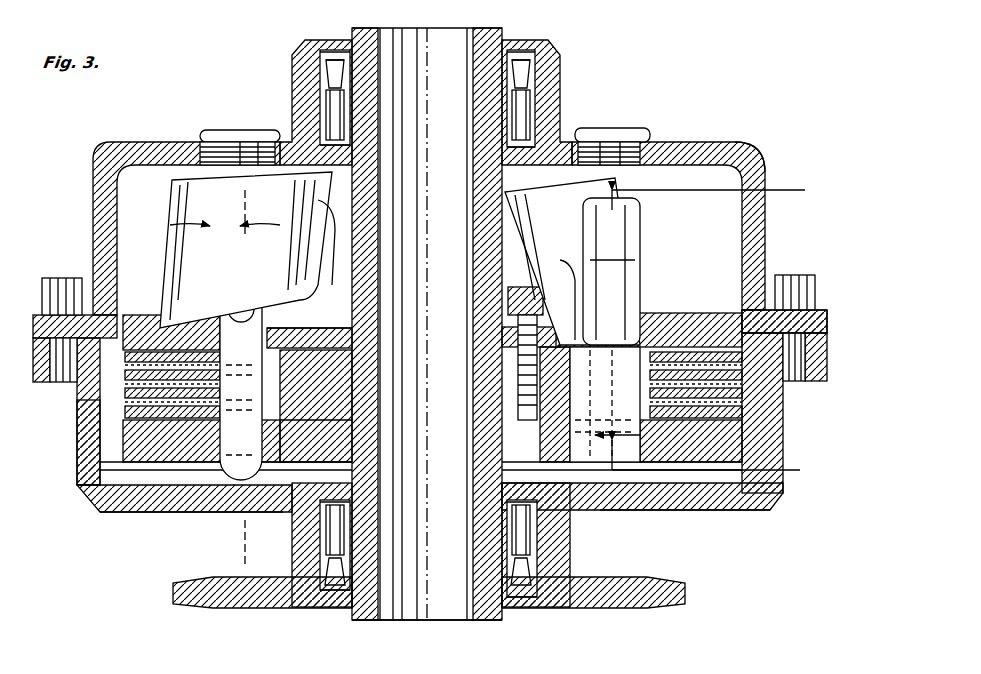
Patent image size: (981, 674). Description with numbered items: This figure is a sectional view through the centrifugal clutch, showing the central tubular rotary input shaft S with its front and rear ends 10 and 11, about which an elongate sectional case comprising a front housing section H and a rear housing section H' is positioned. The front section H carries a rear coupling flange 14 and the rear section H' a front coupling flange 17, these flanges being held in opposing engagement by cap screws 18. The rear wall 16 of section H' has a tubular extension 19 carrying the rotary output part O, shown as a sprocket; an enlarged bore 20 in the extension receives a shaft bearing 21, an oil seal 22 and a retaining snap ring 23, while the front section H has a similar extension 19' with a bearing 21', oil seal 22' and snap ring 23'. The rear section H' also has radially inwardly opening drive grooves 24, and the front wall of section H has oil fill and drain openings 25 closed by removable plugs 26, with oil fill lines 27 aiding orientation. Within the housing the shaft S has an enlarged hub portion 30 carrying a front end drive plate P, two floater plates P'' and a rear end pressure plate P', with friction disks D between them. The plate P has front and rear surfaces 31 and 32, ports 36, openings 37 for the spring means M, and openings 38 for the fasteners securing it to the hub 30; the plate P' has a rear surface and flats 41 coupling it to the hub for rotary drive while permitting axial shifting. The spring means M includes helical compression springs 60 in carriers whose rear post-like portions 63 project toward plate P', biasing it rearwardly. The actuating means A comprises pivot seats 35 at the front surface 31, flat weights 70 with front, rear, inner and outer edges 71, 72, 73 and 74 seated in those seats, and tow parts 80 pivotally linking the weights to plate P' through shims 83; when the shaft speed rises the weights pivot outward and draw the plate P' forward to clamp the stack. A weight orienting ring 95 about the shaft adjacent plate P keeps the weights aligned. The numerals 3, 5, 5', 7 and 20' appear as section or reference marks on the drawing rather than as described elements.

The rotary input shaft S is at (432, 622).
The front end of shaft 10 is at (560, 27).
The rear end of shaft 11 is at (493, 624).
The tubular extension 19 is at (404, 572).
The extension 19' is at (501, 112).
The enlarged bore 20 is at (461, 557).
The bearing cone 20' is at (474, 89).
The shaft bearing 21 is at (479, 548).
The bearing 21' is at (523, 77).
The oil seal 22 is at (472, 549).
The oil seal 22' is at (520, 99).
The snap ring 23 is at (436, 566).
The snap ring 23' is at (520, 90).
The drive grooves 24 is at (103, 458).
The oil fill and drain openings 25 is at (660, 142).
The removable plugs 26 is at (640, 136).
The oil fill lines 27 is at (750, 143).
The front housing section H is at (430, 317).
The rear housing section H' is at (435, 519).
The section indicator 7 is at (727, 331).
The spring means M is at (642, 234).
The front end plate P is at (784, 278).
The cap screws 18 is at (792, 276).
The coupling flange 14 is at (830, 310).
The front coupling flange 17 is at (829, 382).
The outer edge of weight 74 is at (165, 182).
The front edge of weight 71 is at (192, 180).
The inner edge of weight 73 is at (343, 200).
The section line 5 is at (140, 209).
The section line 5' is at (136, 552).
The actuating means A is at (170, 213).
The actuating weights 70 is at (165, 228).
The pivot seats 35 is at (170, 322).
The front surface of front end plate 31 is at (340, 320).
The weight orienting ring 95 is at (340, 336).
The rear surface of front end plate 32 is at (345, 346).
The rear edge of weight 72 is at (378, 365).
The ports 36 is at (380, 374).
The member edge 3 is at (350, 422).
The rear surface of rear end plate 41 is at (530, 448).
The hub portion 30 is at (385, 455).
The openings 38 is at (628, 312).
The openings 37 is at (633, 312).
The rear post-like portions 63 is at (637, 312).
The helical compression springs 60 is at (612, 422).
The friction disks D is at (110, 400).
The floater plates P'' is at (120, 399).
The rear end plate P' is at (120, 403).
The shims 83 is at (140, 513).
The tow parts 80 is at (208, 513).
The rear wall 16 is at (665, 511).
The rotary output part O is at (642, 612).